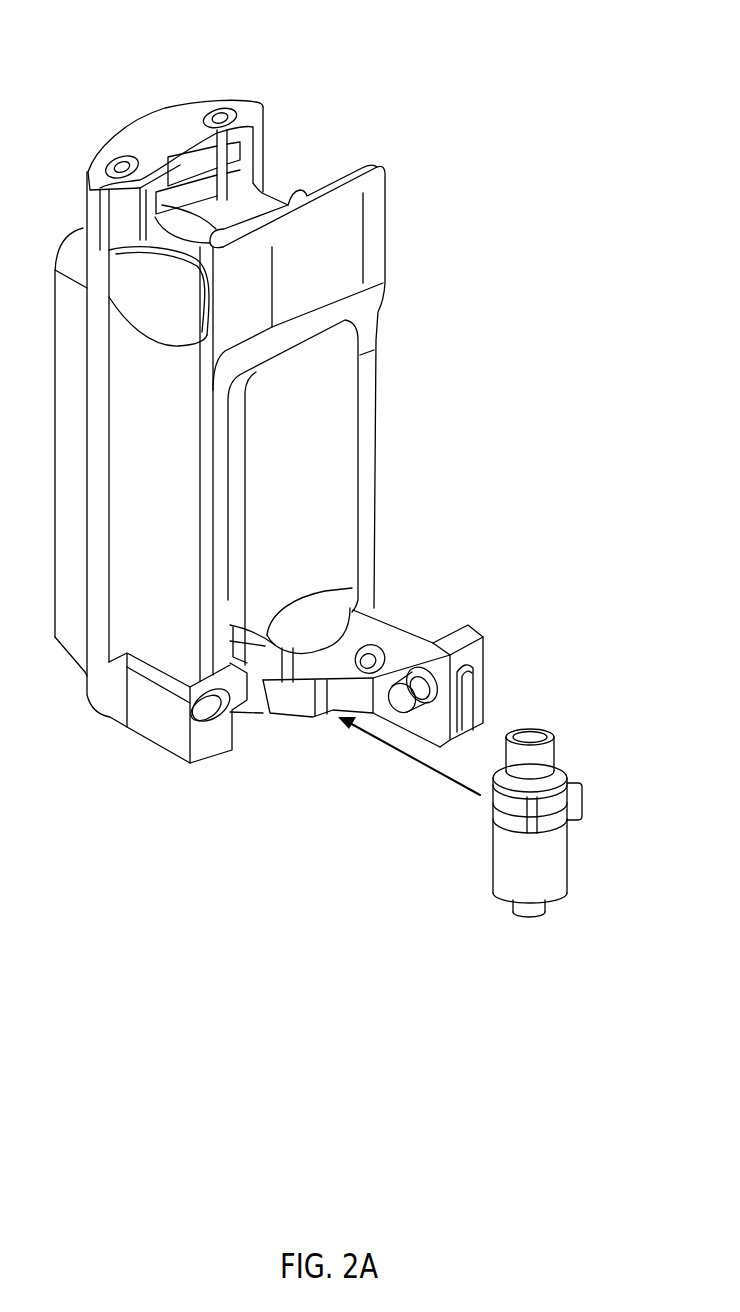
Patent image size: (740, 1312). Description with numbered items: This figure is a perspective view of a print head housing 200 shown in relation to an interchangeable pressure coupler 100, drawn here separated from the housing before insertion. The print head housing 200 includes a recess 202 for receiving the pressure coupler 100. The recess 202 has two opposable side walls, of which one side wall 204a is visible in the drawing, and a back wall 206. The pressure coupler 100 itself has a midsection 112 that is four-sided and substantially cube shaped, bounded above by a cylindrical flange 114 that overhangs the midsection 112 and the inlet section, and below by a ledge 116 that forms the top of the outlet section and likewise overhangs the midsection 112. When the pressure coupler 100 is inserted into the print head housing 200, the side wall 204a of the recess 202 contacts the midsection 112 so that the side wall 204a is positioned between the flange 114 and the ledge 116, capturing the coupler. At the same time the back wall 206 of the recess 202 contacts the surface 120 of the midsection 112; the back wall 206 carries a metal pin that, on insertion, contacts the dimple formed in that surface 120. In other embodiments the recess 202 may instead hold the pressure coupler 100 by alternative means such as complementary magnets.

The print head housing 200 is at (236, 82).
The recess 202 is at (255, 638).
The side wall 204a is at (283, 648).
The back wall 206 is at (238, 645).
The pressure coupler 100 is at (540, 698).
The flange 114 is at (555, 770).
The midsection 112 is at (584, 784).
The ledge 116 is at (508, 826).
The surface 120 is at (490, 800).